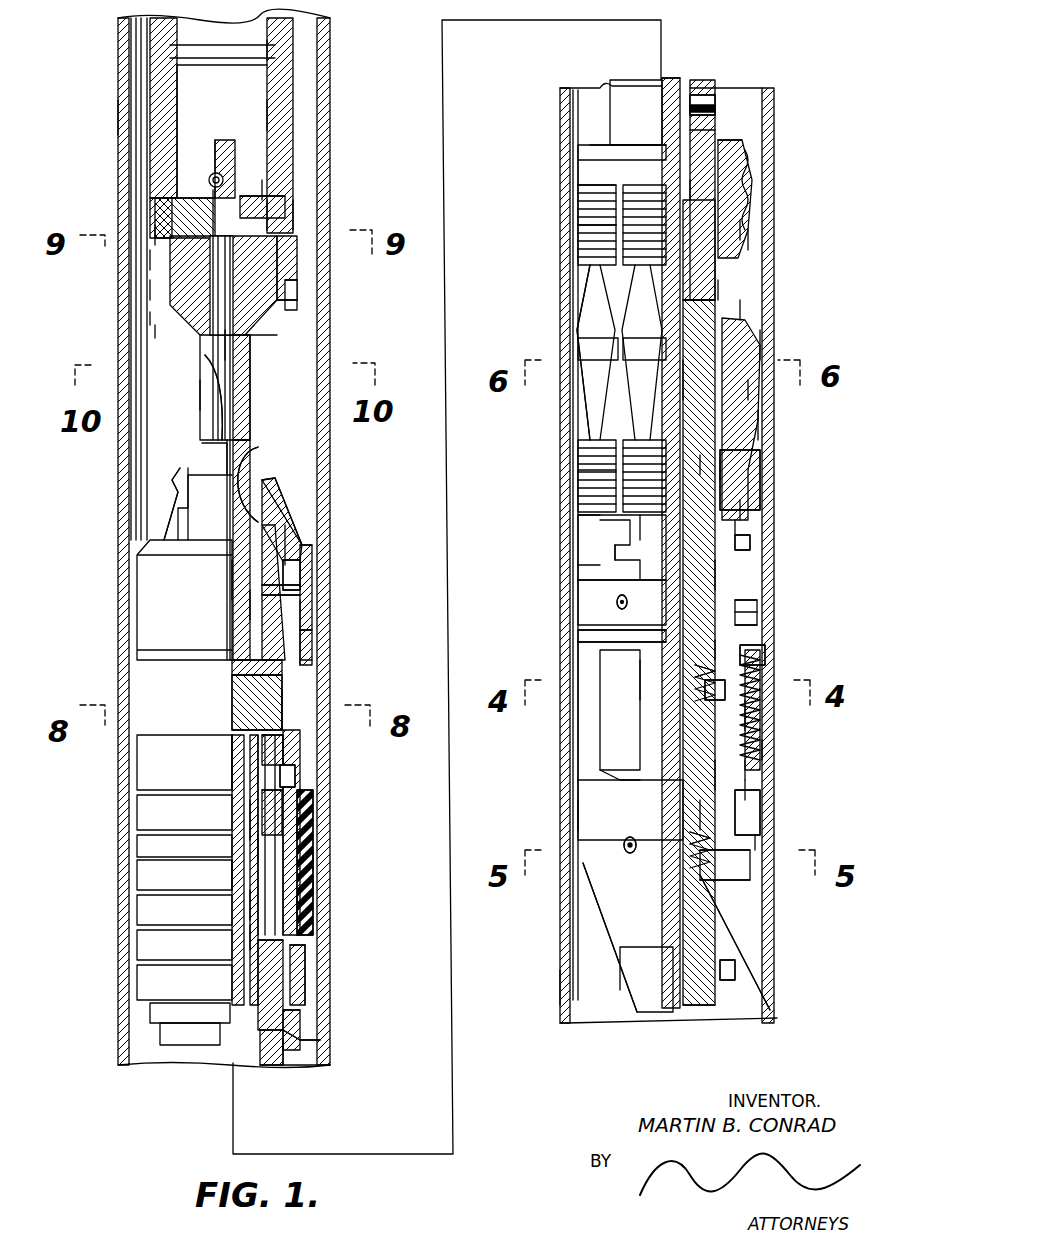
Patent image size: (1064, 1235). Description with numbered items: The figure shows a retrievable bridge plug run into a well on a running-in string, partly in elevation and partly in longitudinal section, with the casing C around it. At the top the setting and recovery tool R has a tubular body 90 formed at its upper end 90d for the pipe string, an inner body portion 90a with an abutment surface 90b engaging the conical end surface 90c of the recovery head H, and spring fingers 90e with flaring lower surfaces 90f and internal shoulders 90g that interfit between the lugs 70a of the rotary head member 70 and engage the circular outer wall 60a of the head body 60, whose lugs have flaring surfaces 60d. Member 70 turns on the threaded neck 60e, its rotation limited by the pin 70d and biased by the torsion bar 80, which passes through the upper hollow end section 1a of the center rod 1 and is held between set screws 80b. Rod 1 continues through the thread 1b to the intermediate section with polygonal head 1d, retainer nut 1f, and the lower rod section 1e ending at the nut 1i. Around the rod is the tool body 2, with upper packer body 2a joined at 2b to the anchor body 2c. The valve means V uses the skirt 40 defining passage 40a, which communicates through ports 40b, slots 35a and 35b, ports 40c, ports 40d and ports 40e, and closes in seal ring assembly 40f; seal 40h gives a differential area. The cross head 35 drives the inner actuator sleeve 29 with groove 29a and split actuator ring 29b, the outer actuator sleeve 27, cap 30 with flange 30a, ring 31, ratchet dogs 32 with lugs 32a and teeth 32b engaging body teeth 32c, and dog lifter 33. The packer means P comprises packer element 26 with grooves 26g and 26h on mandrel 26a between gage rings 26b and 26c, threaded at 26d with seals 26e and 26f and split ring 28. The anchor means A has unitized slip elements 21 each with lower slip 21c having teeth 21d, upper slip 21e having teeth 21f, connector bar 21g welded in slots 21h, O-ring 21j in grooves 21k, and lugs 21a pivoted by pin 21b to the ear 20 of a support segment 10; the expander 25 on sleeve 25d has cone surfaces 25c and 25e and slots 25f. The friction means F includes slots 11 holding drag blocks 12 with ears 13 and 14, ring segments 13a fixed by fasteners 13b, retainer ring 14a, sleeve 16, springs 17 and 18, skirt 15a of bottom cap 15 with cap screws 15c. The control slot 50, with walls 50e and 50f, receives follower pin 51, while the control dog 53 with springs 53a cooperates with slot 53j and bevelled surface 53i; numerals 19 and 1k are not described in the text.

The casing C is at (578, 985).
The upper end connection of tool body 90d is at (276, 44).
The set screws 80b is at (233, 196).
The inner body portion 90a is at (292, 110).
The conical end surface 90c is at (268, 190).
The threaded neck 60e is at (205, 196).
The pin 70d is at (262, 198).
The rotary head member 70 is at (190, 187).
The abutment surface 90b is at (280, 202).
The spring fingers 90e is at (295, 216).
The lugs 70a is at (160, 236).
The upwardly flaring outer surface 60d is at (165, 262).
The circular outer wall 60a is at (168, 287).
The setting and recovery tool R is at (155, 321).
The recovery head H is at (165, 332).
The internal shoulders 90g is at (292, 284).
The tubular body 90 is at (292, 306).
The outwardly flaring lower end surfaces 90f is at (284, 310).
The head body 60 is at (262, 306).
The torsion bar 80 is at (228, 358).
The center or control rod 1 is at (194, 396).
The upper hollow end section 1a is at (206, 425).
The ratchet teeth on body 32c is at (250, 470).
The ratchet dogs 32 is at (275, 521).
The ratchet teeth on dogs 32b is at (300, 476).
The dog lug 32a is at (283, 503).
The dog lifter 33 is at (282, 531).
The end flange of cap 30a is at (300, 549).
The supporting ring for ratchet dogs 31 is at (300, 566).
The annular groove 29a is at (290, 586).
The split actuator ring 29b is at (300, 599).
The upper packer body 2a is at (290, 1053).
The ports in actuator ring 40d is at (265, 609).
The cap 30 is at (306, 621).
The ports in actuator sleeve 40c is at (306, 651).
The outer actuator sleeve 27 is at (304, 666).
The slots in actuator sleeve 35b is at (281, 703).
The cross head 35 is at (240, 706).
The upper gage ring 26b is at (300, 746).
The thread 1b is at (237, 768).
The split ring 28 is at (295, 776).
The inner actuator sleeve 29 is at (275, 806).
The ports in skirt 40b is at (250, 821).
The upwardly opening conical grooves 26g is at (310, 831).
The elongate slots in body 35a is at (265, 846).
The packer element 26 is at (312, 861).
The downwardly opening conical grooves 26h is at (320, 881).
The skirt or valve member 40 is at (250, 901).
The packer mandrel 26a is at (300, 906).
The packer means P is at (315, 926).
The passage 40a is at (250, 936).
The lower gage ring 26c is at (305, 951).
The seal ring 26e is at (305, 966).
The seal ring 26f is at (283, 961).
The threaded connection of packer mandrel 26d is at (300, 1016).
The seal 40h is at (296, 1041).
The tool body 2 is at (293, 1074).
The valve means V is at (699, 78).
The grooves 21k is at (628, 152).
The ports in body section 40e is at (715, 121).
The seal ring assembly 40f is at (720, 146).
The garter spring O-ring 21j is at (736, 156).
The slots in slips 21h is at (690, 541).
The upper slip 21e is at (600, 191).
The connection of packer body to anchor body 2b is at (700, 189).
The teeth of upper slip 21f is at (590, 236).
The anchor means A is at (762, 241).
The lower cone surface 25c is at (756, 396).
The longitudinal slots in cone 25f is at (741, 311).
The expander sleeve 25d is at (710, 316).
The expander 25 is at (761, 341).
The anchor body 2c is at (688, 381).
The connector bar 21g is at (625, 421).
The unitized slip element 21 is at (765, 436).
The retainer nut 1f is at (700, 466).
The upper cone surface / shoulder 25e is at (721, 471).
The teeth of lower slip 21d is at (590, 471).
The lock ring 19 is at (731, 491).
The polygonal head 1d is at (741, 511).
The lower slip 21c is at (596, 521).
The ear of drag block support 20 is at (736, 526).
The pivot pin 21b is at (751, 549).
The ears or lugs of slip element 21a is at (640, 566).
The support segments 10 is at (741, 651).
The control slot 50 is at (700, 616).
The fastener 13b is at (741, 601).
The ring segment 13a is at (746, 616).
The drag block end ears 13 is at (751, 626).
The angular wall 50f is at (710, 646).
The longitudinal wall of stop 50e is at (705, 661).
The third coiled spring 18 is at (746, 669).
The lower rod section 1e is at (680, 681).
The follower pin 51 is at (700, 684).
The coiled springs 17 is at (766, 716).
The friction means F is at (782, 753).
The dog biasing springs / dog main body 53a is at (690, 856).
The drag block 12 is at (751, 776).
The elongate slots 11 is at (756, 791).
The sleeve 16 is at (720, 776).
The retainer ring 14a is at (595, 813).
The control dog 53 is at (705, 809).
The drag block end ears 14 is at (746, 811).
The cap screws 15c is at (761, 841).
The skirt 15a is at (580, 871).
The slot in cap skirt 53j is at (741, 861).
The inner bevelled surface 53i is at (736, 873).
The bottom cap 15 is at (716, 926).
The nut 1i is at (736, 981).
The body bottom 1k is at (705, 1006).